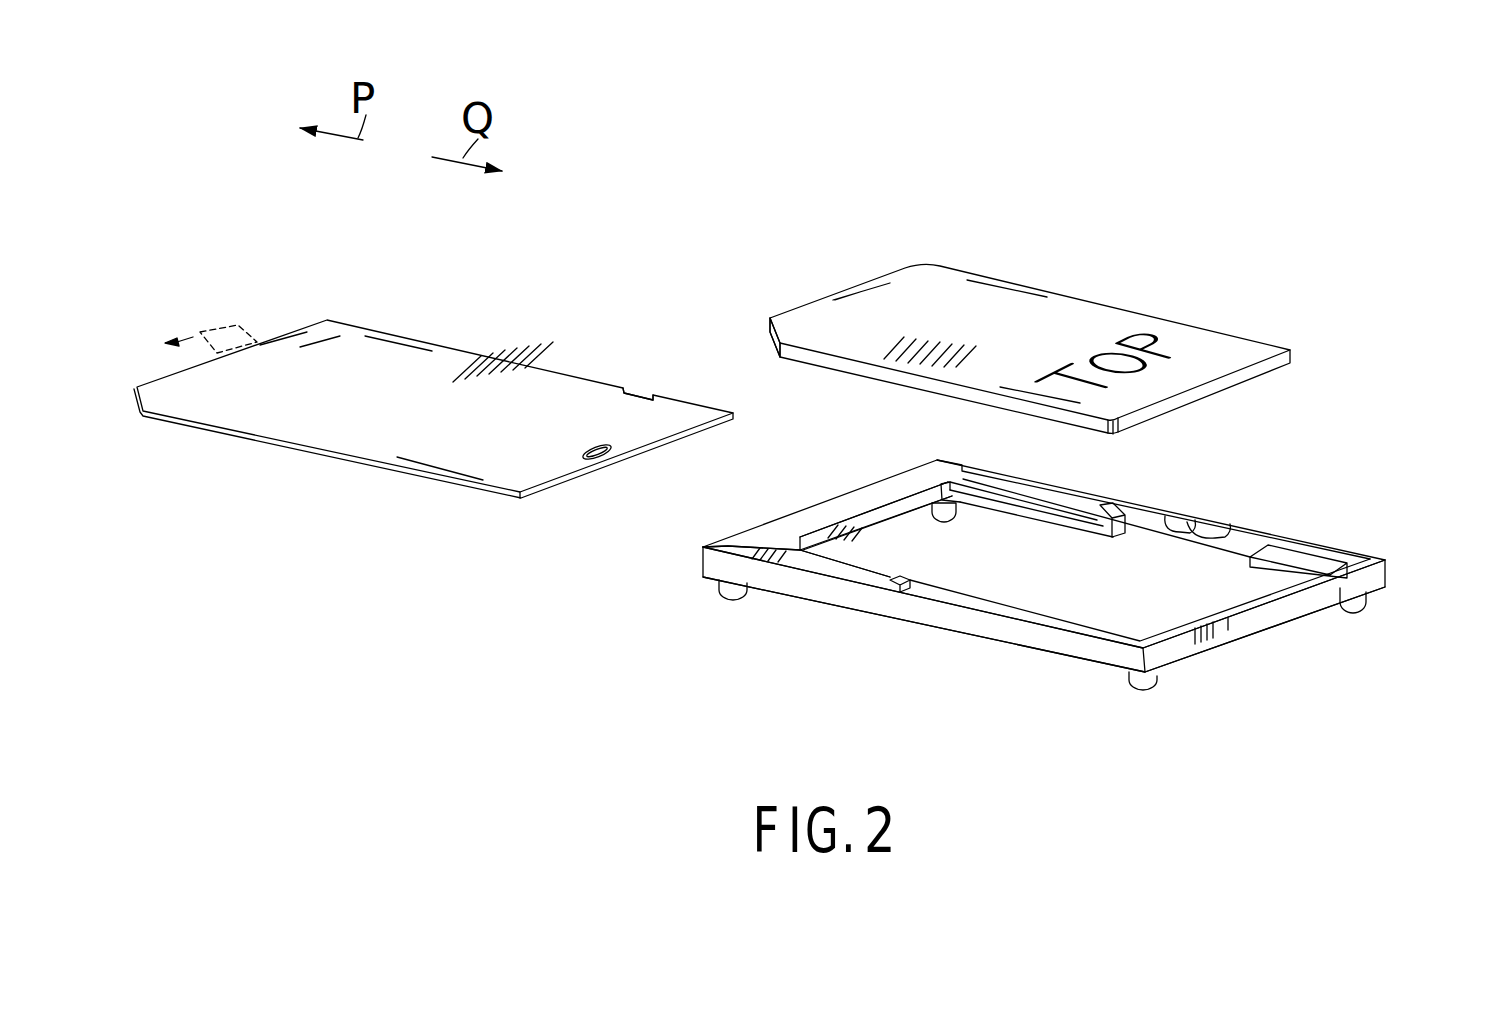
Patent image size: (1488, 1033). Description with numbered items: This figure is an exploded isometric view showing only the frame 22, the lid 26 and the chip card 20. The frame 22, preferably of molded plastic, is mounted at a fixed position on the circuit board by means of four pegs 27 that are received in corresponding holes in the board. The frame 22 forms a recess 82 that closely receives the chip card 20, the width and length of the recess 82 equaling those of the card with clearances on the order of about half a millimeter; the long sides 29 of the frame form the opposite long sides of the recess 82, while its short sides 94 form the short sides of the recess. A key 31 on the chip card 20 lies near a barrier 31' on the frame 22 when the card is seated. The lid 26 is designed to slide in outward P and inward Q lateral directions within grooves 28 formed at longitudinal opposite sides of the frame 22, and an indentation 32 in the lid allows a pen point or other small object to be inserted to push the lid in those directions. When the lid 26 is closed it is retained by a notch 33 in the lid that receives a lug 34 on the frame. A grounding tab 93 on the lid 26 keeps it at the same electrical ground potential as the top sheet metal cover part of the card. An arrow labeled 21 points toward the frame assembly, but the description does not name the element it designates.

The chip card 20 is at (1048, 285).
The base assembly 21 is at (650, 600).
The frame 22 is at (1288, 527).
The lid 26 is at (483, 348).
The pegs 27 is at (1350, 613).
The grooves 28 is at (1073, 490).
The long sides 29 is at (1340, 543).
The key 31 is at (736, 295).
The barrier 31' is at (796, 618).
The indentation 32 is at (595, 455).
The notch 33 is at (640, 393).
The lug 34 is at (1237, 527).
The recess 82 is at (872, 522).
The grounding tab 93 is at (213, 325).
The short sides 94 is at (895, 490).